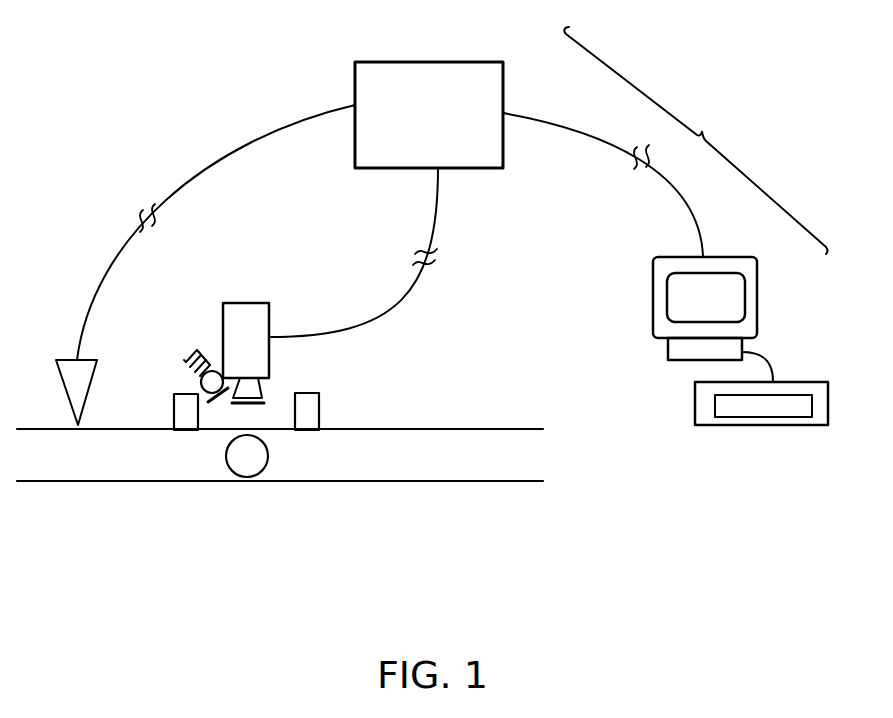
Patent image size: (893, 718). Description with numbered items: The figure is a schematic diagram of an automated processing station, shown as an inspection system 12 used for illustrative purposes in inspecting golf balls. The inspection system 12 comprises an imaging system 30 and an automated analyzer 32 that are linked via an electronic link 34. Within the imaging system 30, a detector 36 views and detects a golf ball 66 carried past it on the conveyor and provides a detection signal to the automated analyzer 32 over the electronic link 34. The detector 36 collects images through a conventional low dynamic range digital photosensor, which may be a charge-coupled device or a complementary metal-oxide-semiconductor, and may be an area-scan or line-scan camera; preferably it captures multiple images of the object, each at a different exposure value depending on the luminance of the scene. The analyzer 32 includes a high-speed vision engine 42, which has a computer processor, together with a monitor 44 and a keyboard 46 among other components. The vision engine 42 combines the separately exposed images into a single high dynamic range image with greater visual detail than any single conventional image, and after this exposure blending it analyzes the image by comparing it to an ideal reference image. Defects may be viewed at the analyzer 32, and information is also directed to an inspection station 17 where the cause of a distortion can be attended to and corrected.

The inspection system 12 is at (124, 101).
The inspection station 17 is at (442, 556).
The imaging system 30 is at (286, 303).
The automated analyzer 32 is at (665, 142).
The electronic link 34 is at (395, 308).
The detector 36 is at (223, 326).
The vision engine 42 is at (441, 127).
The monitor 44 is at (757, 300).
The keyboard 46 is at (828, 407).
The golf ball 66 is at (259, 466).